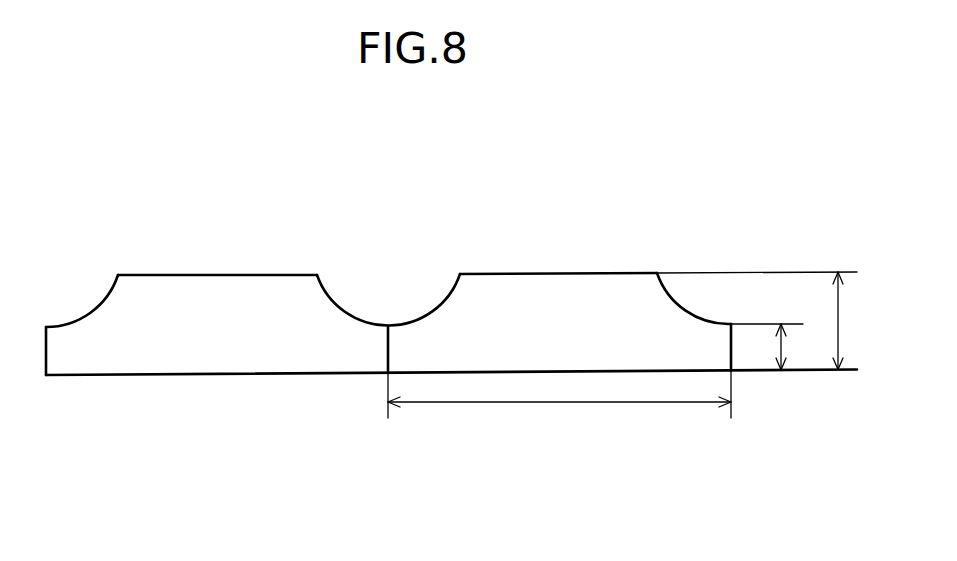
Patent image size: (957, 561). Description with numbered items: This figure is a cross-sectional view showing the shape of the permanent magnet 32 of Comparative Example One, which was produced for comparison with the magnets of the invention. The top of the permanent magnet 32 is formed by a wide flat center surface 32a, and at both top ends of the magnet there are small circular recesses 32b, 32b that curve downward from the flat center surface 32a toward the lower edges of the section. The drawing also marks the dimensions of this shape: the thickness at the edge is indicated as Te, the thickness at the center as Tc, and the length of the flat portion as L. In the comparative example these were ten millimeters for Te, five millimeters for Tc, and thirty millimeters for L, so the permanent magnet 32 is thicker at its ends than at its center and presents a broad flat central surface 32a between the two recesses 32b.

The permanent magnet 32 is at (456, 316).
The flat center surface 32a is at (567, 273).
The circular recess 32b is at (348, 312).